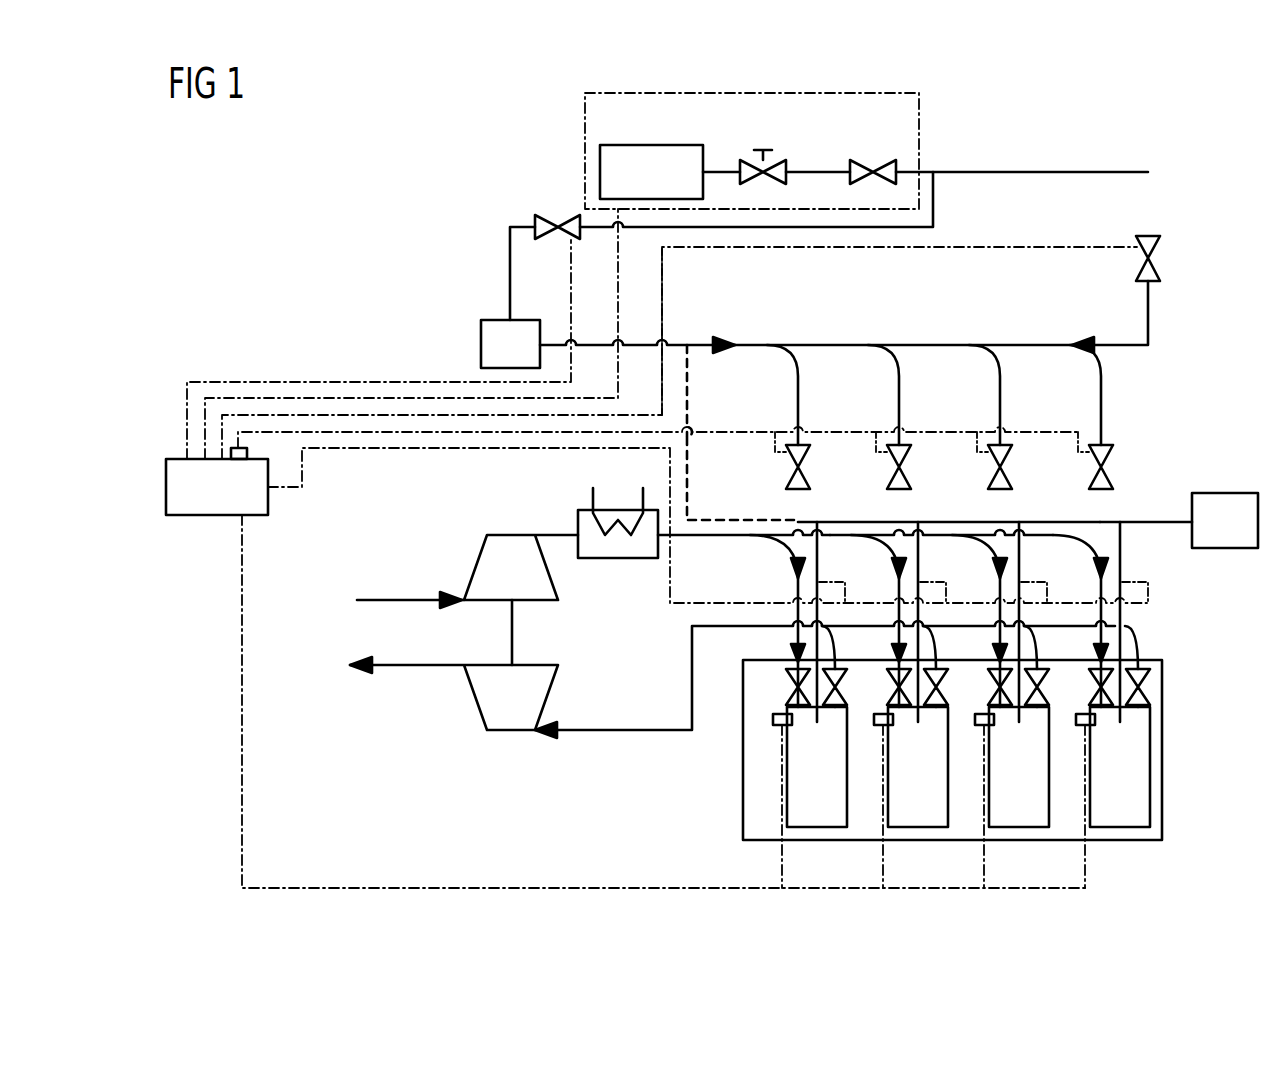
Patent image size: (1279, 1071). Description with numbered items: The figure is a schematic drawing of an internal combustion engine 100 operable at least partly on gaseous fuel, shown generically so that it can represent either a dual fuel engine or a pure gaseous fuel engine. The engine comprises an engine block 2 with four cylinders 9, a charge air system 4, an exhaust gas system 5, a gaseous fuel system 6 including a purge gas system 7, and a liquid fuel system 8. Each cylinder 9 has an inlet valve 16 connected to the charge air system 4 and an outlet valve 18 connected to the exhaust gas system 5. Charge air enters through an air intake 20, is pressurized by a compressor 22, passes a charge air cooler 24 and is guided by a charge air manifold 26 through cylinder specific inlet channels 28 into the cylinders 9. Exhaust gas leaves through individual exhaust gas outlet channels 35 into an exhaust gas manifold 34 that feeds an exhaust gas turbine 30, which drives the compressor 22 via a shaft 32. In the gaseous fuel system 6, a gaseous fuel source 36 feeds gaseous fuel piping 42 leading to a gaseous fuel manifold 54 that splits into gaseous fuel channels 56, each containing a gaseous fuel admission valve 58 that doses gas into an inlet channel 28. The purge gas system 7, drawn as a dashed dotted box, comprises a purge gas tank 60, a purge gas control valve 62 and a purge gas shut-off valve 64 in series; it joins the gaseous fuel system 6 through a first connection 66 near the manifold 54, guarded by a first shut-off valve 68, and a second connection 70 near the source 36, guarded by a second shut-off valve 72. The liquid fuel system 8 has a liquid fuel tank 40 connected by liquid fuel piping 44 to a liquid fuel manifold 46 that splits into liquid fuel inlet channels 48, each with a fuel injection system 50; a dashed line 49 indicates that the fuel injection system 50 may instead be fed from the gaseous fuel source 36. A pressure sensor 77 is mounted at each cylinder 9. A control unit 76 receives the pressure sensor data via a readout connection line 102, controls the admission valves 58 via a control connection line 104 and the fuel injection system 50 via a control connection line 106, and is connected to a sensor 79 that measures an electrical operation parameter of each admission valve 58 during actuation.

The internal combustion engine 100 is at (468, 93).
The engine block 2 is at (742, 800).
The charge air system 4 is at (470, 533).
The exhaust gas system 5 is at (465, 718).
The gaseous fuel system 6 is at (870, 330).
The purge gas system 7 is at (921, 122).
The liquid fuel system 8 is at (1178, 484).
The cylinder 9 is at (1126, 858).
The inlet valve 16 is at (1108, 730).
The outlet valve 18 is at (1131, 748).
The air intake 20 is at (413, 598).
The compressor 22 is at (553, 578).
The charge air cooler 24 is at (618, 510).
The charge air manifold 26 is at (833, 534).
The inlet channel 28 is at (789, 534).
The exhaust gas turbine 30 is at (552, 698).
The shaft 32 is at (515, 633).
The exhaust gas manifold 34 is at (692, 649).
The exhaust gas outlet channel 35 is at (830, 652).
The gaseous fuel source 36 is at (508, 320).
The liquid fuel tank 40 is at (1228, 549).
The gaseous fuel piping 42 is at (594, 340).
The liquid fuel piping 44 is at (1155, 523).
The liquid fuel manifold 46 is at (1048, 522).
The liquid fuel inlet channel 48 is at (1130, 606).
The dashed line 49 is at (690, 478).
The fuel injection system 50 is at (790, 700).
The gaseous fuel manifold 54 is at (816, 341).
The gaseous fuel channel 56 is at (1127, 402).
The gaseous fuel admission valve 58 is at (1136, 465).
The purge gas tank 60 is at (599, 160).
The purge gas control valve 62 is at (764, 158).
The purge gas shut-off valve 64 is at (878, 158).
The first connection 66 is at (1116, 341).
The first shut-off valve 68 is at (1161, 252).
The second connection 70 is at (935, 214).
The second shut-off valve 72 is at (554, 216).
The control unit 76 is at (218, 516).
The pressure sensor 77 is at (1071, 751).
The sensor 79 is at (250, 456).
The readout connection line 102 is at (459, 885).
The control connection line 104 is at (751, 430).
The control connection line 106 is at (377, 450).